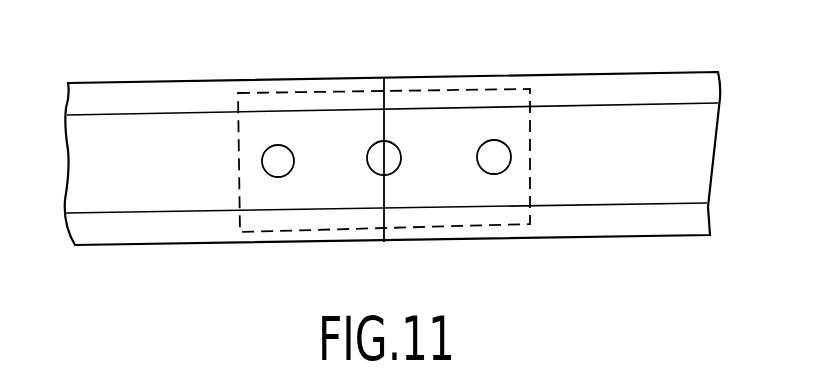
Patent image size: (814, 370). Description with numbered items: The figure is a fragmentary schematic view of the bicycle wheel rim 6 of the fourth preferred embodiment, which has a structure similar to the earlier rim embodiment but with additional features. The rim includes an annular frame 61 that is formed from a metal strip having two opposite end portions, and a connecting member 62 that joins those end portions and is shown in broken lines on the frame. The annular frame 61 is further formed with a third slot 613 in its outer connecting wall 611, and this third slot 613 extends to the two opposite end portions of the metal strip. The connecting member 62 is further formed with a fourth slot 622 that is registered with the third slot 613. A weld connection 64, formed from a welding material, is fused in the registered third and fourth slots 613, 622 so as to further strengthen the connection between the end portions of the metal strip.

The rail 6 is at (431, 163).
The rail body 611 is at (678, 160).
The rail flange 61 is at (635, 217).
The mounting plate 62 is at (530, 177).
The center hole 64 is at (403, 220).
The hole of rail 613 is at (428, 220).
The hole of mounting plate 622 is at (402, 163).